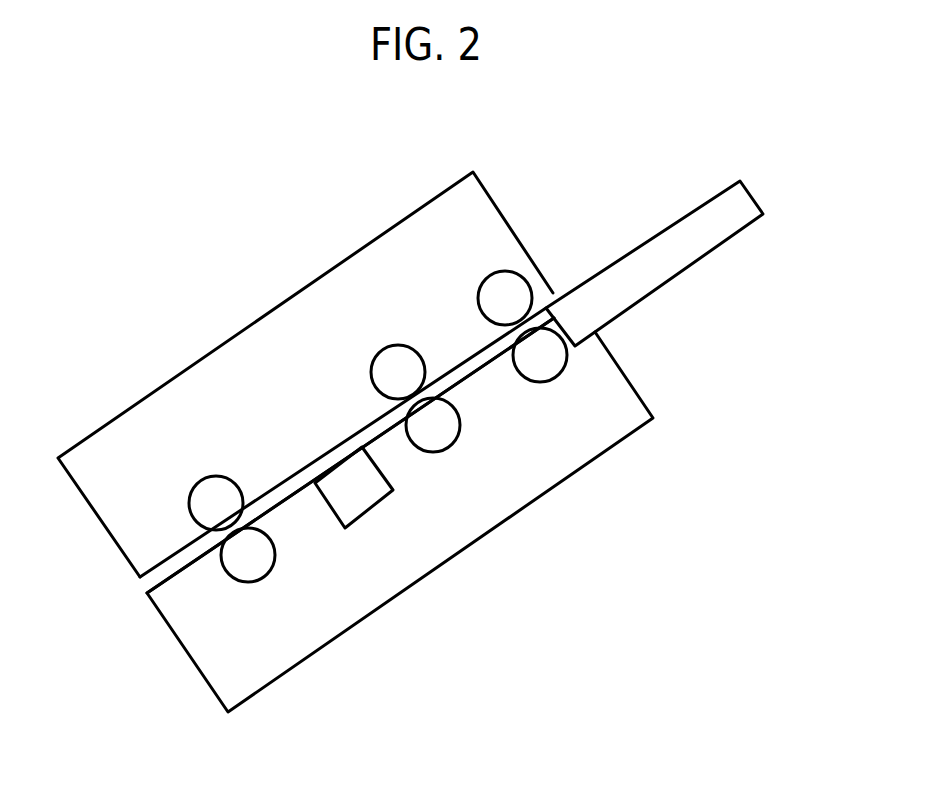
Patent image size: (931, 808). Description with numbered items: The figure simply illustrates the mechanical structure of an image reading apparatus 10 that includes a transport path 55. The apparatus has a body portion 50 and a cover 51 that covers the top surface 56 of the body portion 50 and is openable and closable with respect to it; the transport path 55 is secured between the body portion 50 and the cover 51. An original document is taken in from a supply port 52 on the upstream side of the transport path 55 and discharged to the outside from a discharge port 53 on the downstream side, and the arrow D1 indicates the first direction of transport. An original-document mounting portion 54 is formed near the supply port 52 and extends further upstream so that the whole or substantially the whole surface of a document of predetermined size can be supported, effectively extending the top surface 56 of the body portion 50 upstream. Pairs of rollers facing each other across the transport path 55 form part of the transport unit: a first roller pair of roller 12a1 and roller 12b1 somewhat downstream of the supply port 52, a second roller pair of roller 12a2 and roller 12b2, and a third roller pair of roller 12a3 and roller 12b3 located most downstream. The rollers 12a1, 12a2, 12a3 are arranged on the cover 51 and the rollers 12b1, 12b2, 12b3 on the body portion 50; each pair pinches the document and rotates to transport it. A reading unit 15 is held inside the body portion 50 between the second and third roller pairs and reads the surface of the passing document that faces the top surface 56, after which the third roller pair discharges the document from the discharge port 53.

The image reading apparatus 10 is at (435, 441).
The cover 51 is at (487, 192).
The body portion 50 is at (643, 403).
The supply port 52 is at (561, 284).
The original-document mounting portion 54 is at (749, 194).
The roller 12a1 is at (482, 284).
The roller 12a2 is at (375, 361).
The roller 12a3 is at (217, 475).
The roller 12b1 is at (563, 369).
The roller 12b2 is at (460, 428).
The roller 12b3 is at (246, 583).
The reading unit 15 is at (396, 488).
The discharge port 53 is at (125, 591).
The transport path 55 is at (297, 481).
The top surface 56 is at (493, 367).
The first direction D1 is at (332, 403).